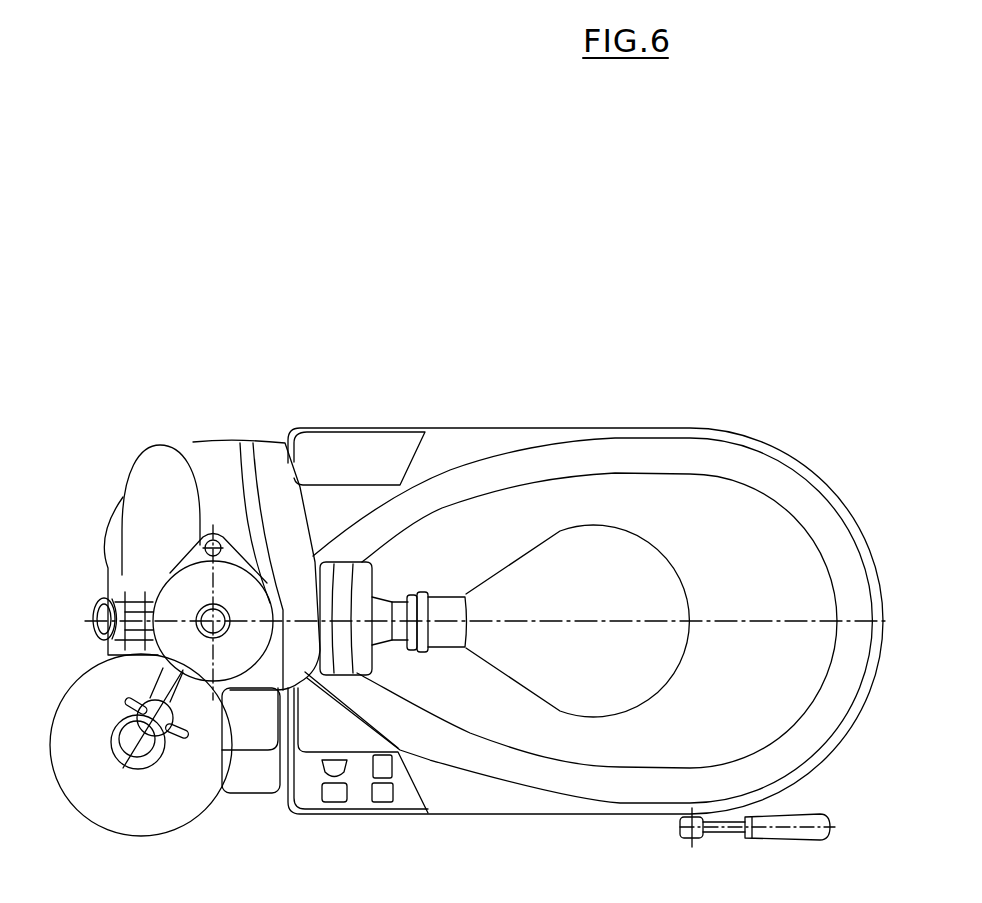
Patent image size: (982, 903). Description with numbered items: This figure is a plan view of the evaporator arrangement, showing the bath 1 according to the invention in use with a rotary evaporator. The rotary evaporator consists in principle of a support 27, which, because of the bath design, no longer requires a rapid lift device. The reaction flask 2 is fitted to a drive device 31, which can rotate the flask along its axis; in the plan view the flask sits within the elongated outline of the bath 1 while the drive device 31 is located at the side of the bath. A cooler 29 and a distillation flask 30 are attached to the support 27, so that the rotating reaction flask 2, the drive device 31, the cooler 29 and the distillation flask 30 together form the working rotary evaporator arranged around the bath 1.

The bath 1 is at (608, 787).
The reaction flask 2 is at (605, 553).
The support 27 is at (258, 777).
The cooler 29 is at (178, 602).
The distillation flask 30 is at (150, 815).
The drive device 31 is at (258, 456).